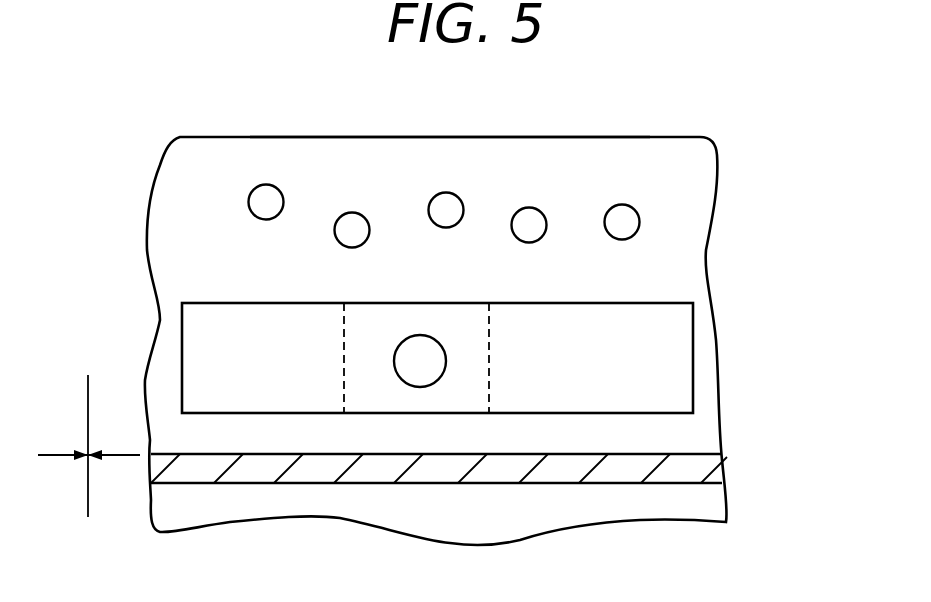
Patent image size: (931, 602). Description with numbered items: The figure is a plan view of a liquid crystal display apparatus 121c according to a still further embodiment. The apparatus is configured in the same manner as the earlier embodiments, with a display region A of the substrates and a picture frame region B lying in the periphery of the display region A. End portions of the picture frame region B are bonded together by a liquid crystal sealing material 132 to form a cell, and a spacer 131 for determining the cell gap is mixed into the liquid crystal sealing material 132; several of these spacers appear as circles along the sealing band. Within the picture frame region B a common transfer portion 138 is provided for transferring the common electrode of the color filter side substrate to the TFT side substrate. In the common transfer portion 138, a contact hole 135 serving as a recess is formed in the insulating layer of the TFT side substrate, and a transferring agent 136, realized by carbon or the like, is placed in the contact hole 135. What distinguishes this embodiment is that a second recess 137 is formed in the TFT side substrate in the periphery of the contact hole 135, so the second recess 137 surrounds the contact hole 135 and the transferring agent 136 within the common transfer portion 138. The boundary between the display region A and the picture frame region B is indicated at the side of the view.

The liquid crystal display apparatus 121c is at (715, 120).
The spacer 131 is at (353, 222).
The liquid crystal sealing material 132 is at (530, 167).
The contact hole 135 is at (472, 338).
The transferring agent 136 is at (444, 366).
The second recess 137 is at (673, 314).
The common transfer portion 138 is at (178, 316).
The display region A is at (88, 495).
The picture frame region B is at (88, 402).